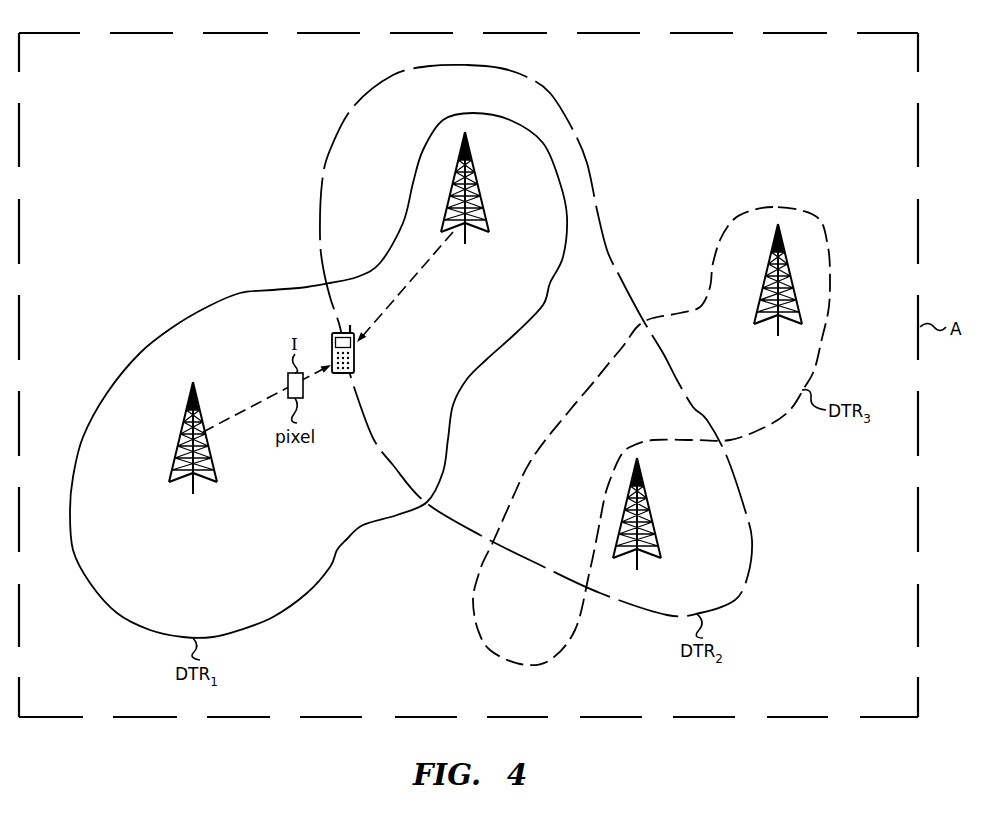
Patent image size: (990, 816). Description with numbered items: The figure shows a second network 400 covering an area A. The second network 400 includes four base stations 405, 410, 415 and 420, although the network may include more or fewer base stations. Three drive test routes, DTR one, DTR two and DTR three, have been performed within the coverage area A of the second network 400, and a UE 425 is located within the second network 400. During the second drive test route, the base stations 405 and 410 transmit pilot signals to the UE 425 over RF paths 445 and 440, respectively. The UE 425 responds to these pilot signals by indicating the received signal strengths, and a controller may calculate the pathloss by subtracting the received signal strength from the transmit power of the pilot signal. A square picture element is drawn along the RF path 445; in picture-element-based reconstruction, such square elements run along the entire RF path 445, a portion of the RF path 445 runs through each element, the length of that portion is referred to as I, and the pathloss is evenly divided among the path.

The second network 400 is at (666, 167).
The base station 405 is at (190, 486).
The base station 410 is at (483, 204).
The base station 415 is at (654, 531).
The base station 420 is at (777, 330).
The UE 425 is at (357, 350).
The RF path 440 is at (413, 288).
The RF path 445 is at (253, 409).